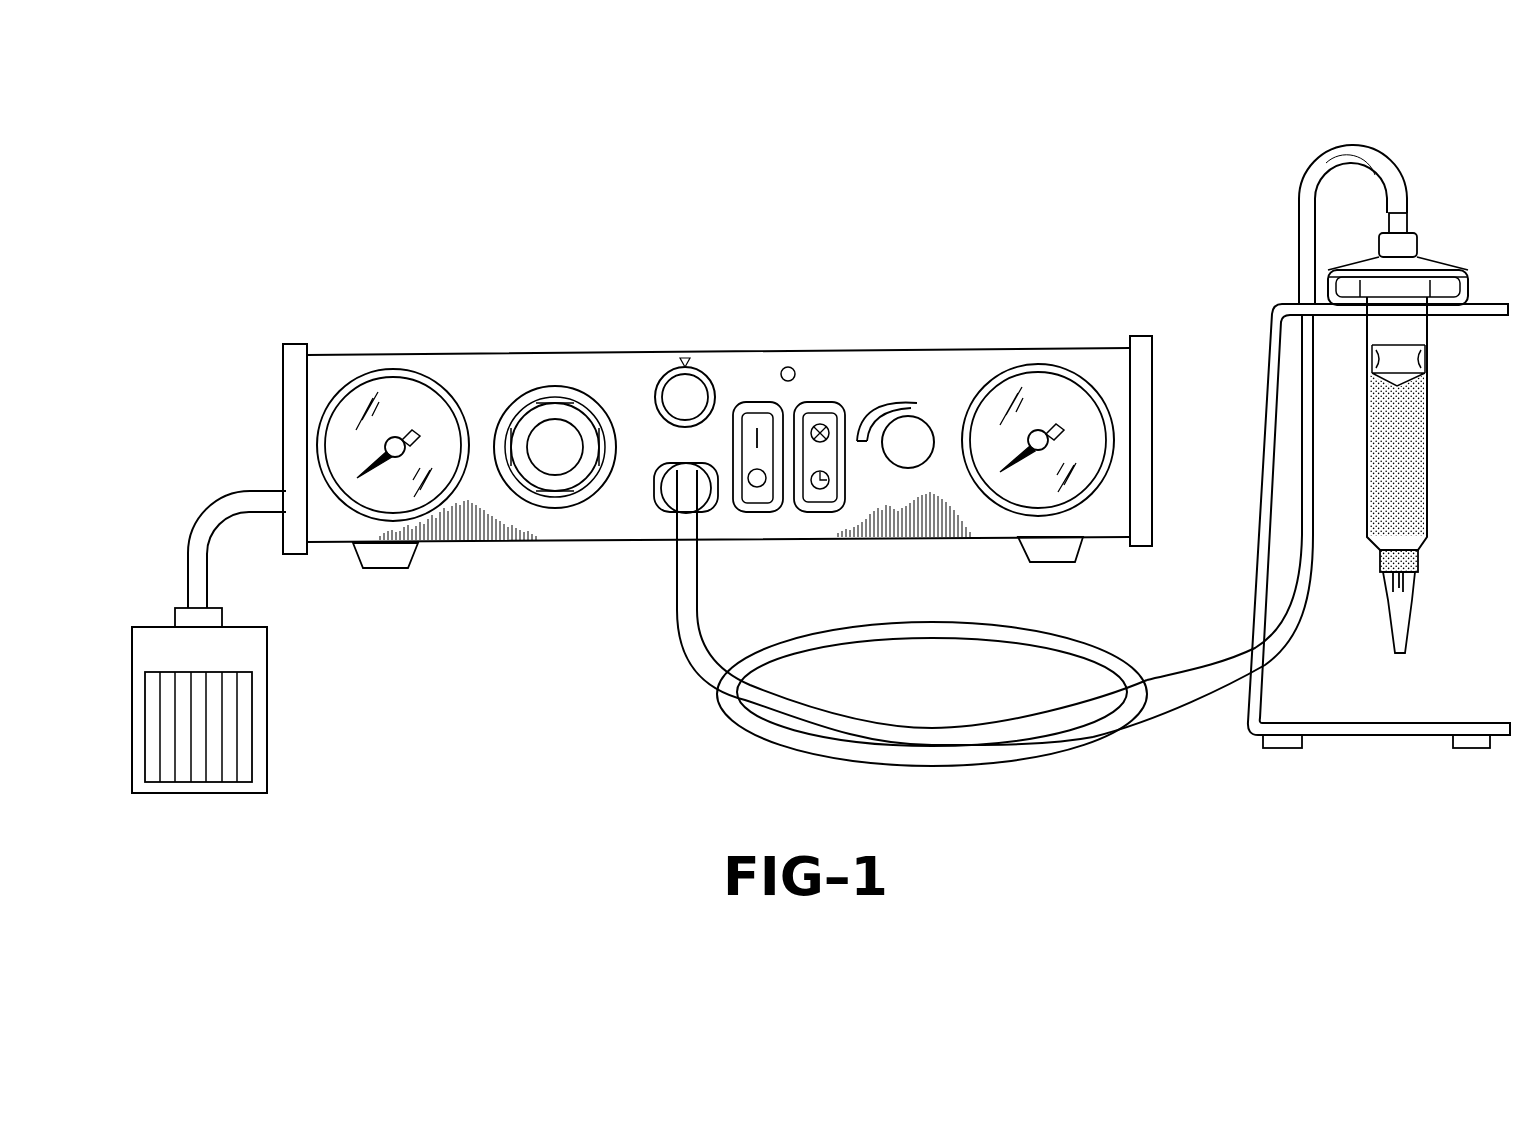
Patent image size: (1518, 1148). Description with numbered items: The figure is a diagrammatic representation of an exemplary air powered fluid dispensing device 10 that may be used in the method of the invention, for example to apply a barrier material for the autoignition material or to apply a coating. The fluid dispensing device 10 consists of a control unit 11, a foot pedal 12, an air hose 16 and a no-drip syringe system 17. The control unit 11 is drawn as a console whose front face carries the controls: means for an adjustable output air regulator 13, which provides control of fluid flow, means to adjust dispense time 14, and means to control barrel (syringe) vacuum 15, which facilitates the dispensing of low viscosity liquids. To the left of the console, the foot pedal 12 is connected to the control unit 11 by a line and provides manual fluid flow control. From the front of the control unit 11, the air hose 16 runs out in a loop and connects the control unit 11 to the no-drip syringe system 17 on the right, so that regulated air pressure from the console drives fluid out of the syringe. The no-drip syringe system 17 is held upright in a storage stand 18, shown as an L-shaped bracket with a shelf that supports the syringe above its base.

The air powered fluid dispensing device 10 is at (358, 295).
The control unit 11 is at (477, 383).
The foot pedal 12 is at (259, 727).
The adjustable output air regulator 13 is at (550, 445).
The means to adjust dispense time 14 is at (690, 395).
The means to control barrel (syringe) vacuum 15 is at (918, 440).
The air hose 16 is at (936, 735).
The no-drip syringe system 17 is at (1410, 423).
The storage stand 18 is at (1272, 424).